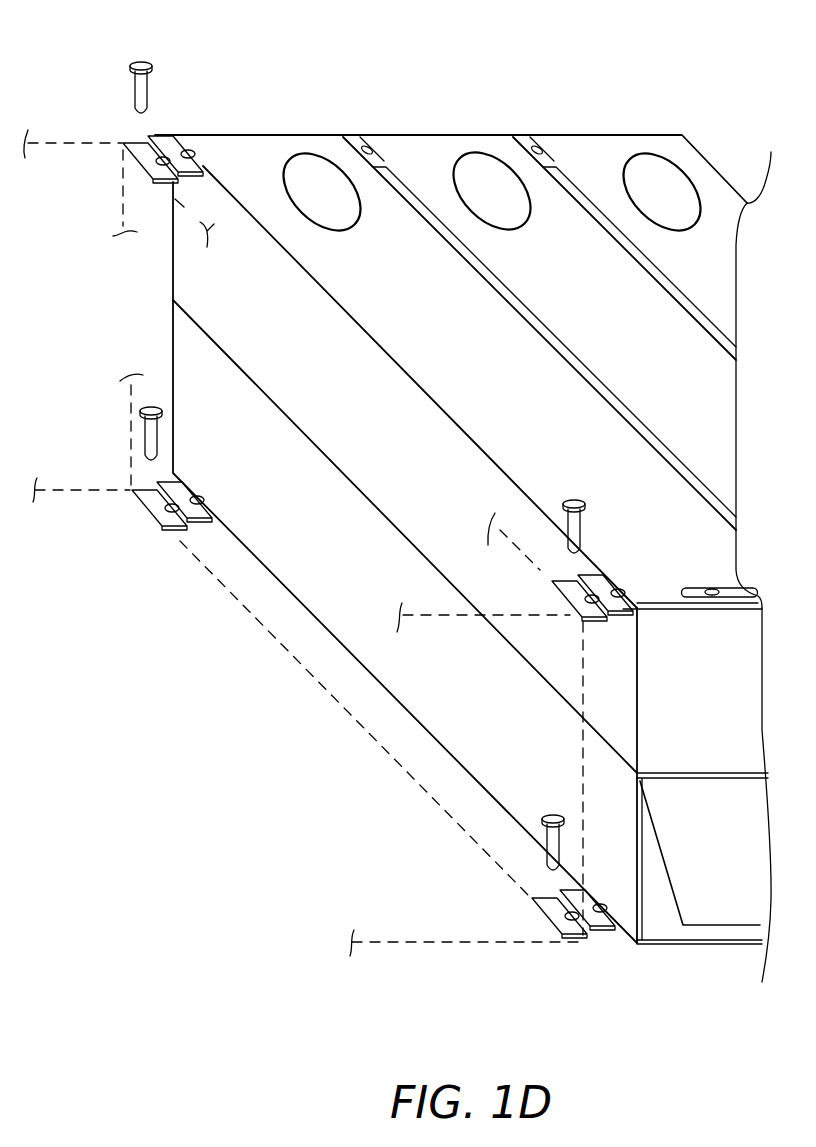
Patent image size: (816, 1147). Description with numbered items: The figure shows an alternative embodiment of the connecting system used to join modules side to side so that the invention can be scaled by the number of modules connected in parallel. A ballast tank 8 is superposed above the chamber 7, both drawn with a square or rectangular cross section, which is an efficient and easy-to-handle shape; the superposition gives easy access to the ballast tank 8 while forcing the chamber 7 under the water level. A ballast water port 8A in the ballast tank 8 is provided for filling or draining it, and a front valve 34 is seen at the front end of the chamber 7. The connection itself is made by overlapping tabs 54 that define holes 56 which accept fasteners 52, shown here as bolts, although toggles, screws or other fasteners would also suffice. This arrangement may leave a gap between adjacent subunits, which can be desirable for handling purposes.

The chamber 7 is at (303, 562).
The ballast tank 8 is at (540, 135).
The ballast water port 8A is at (293, 183).
The front valve 34 is at (683, 915).
The fastener 52 is at (153, 62).
The overlapping tab 54 is at (135, 143).
The hole 56 is at (133, 147).